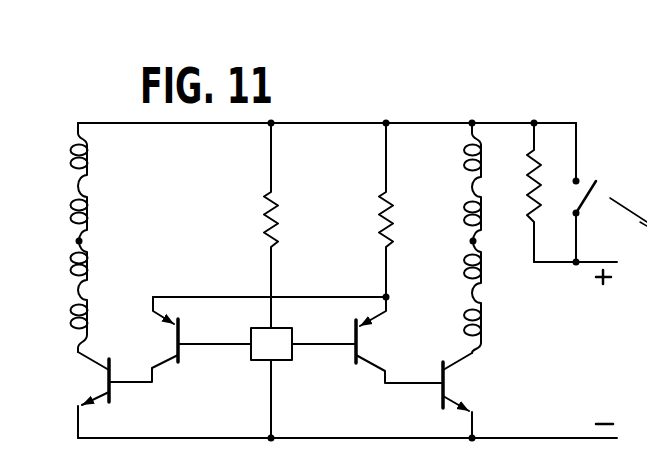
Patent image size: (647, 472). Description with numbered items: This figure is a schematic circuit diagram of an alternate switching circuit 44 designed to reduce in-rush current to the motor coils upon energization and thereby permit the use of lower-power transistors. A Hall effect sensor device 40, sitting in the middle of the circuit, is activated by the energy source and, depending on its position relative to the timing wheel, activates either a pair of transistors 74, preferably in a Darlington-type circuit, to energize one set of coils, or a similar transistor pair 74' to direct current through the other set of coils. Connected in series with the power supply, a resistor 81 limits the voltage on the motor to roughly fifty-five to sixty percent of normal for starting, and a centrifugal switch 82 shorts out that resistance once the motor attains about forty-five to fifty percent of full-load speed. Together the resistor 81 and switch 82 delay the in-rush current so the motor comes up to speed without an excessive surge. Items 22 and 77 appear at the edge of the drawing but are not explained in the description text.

The switching circuit 44 is at (308, 119).
The Hall effect sensor device 40 is at (275, 353).
The pair of transistors 74 is at (164, 367).
The transistor pair 74' is at (382, 367).
The resistor 81 is at (529, 193).
The centrifugal switch 82 is at (592, 199).
The lead conductor 22 is at (621, 199).
The power supply terminal 77 is at (638, 239).